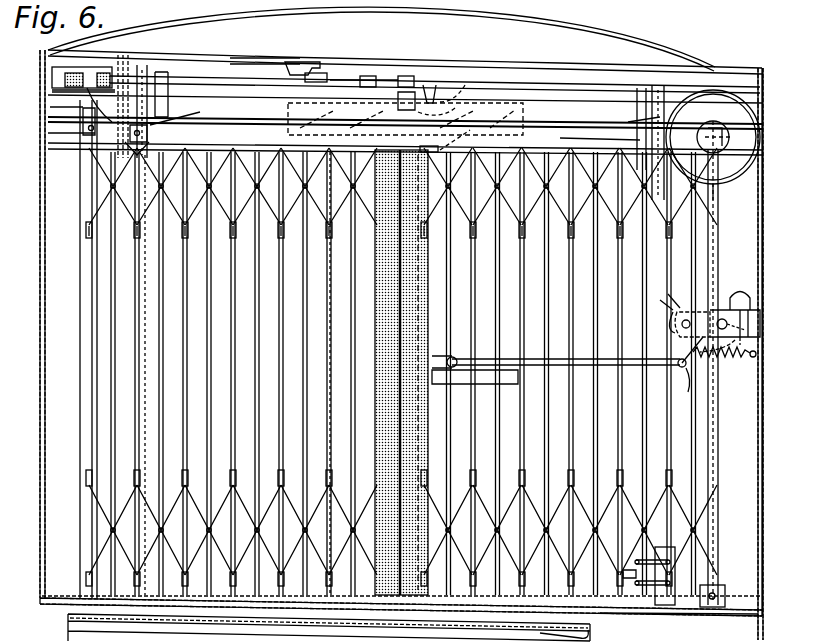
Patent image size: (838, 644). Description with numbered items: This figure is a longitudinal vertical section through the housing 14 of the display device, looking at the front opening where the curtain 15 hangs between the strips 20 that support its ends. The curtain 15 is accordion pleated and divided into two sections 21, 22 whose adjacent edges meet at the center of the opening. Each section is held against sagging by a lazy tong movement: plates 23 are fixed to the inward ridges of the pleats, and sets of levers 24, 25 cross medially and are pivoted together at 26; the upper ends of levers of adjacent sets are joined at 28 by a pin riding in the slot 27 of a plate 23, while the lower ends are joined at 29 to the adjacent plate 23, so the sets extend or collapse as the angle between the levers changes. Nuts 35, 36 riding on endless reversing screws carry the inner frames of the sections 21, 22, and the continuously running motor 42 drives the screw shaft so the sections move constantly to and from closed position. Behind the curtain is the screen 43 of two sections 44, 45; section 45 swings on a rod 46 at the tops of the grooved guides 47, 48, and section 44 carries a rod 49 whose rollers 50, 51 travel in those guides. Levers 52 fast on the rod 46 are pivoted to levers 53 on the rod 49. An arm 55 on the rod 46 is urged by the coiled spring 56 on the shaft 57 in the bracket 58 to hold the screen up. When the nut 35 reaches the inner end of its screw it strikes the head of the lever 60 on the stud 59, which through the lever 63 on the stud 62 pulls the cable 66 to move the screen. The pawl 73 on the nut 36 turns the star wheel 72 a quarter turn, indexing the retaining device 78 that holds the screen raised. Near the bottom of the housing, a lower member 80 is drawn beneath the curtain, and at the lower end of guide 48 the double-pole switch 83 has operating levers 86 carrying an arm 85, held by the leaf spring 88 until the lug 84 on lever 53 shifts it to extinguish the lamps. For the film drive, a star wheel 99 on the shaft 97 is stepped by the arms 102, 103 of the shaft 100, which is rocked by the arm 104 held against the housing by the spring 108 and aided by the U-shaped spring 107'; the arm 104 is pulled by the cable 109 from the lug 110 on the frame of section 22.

The housing 14 is at (762, 450).
The curtain 15 is at (172, 378).
The strips 20 is at (86, 362).
The curtain section 21 is at (325, 327).
The curtain section 22 is at (565, 327).
The plates 23 is at (228, 240).
The levers 24 is at (265, 210).
The levers 25 is at (295, 215).
The pivotal interconnection 26 is at (181, 228).
The slots 27 is at (312, 235).
The interconnection 28 is at (210, 222).
The pivotal interconnection 29 is at (128, 135).
The nut 35 is at (372, 98).
The nut 36 is at (462, 100).
The motor 42 is at (720, 100).
The screen 43 is at (562, 102).
The screen section 44 is at (562, 138).
The screen section 45 is at (535, 100).
The rod 46 is at (170, 78).
The grooved guide 47 is at (145, 318).
The grooved guide 48 is at (653, 290).
The rod 49 is at (175, 140).
The roller 50 is at (195, 113).
The roller 51 is at (640, 138).
The lever 52 is at (168, 95).
The lever 53 is at (170, 130).
The arm 55 is at (120, 150).
The coiled spring 56 is at (88, 96).
The shaft 57 is at (92, 78).
The bracket 58 is at (70, 72).
The stud 59 is at (362, 77).
The lever 60 is at (396, 78).
The stud 62 is at (322, 73).
The lever 63 is at (300, 64).
The cable 66 is at (232, 60).
The star wheel 72 is at (430, 85).
The pawl 73 is at (452, 95).
The retaining device 78 is at (438, 150).
The lower track 80 is at (640, 616).
The double-pole switch 83 is at (716, 593).
The lug 84 is at (660, 170).
The arm 85 is at (585, 620).
The operating levers 86 is at (668, 560).
The leaf spring 88 is at (668, 575).
The shaft 97 is at (687, 318).
The star wheel 99 is at (705, 322).
The shaft 100 is at (740, 322).
The arm 102 is at (715, 305).
The arm 103 is at (756, 355).
The arm 104 is at (690, 380).
The U-shaped spring 107' is at (764, 286).
The spring 108 is at (740, 365).
The cable 109 is at (585, 366).
The lug 110 is at (448, 357).